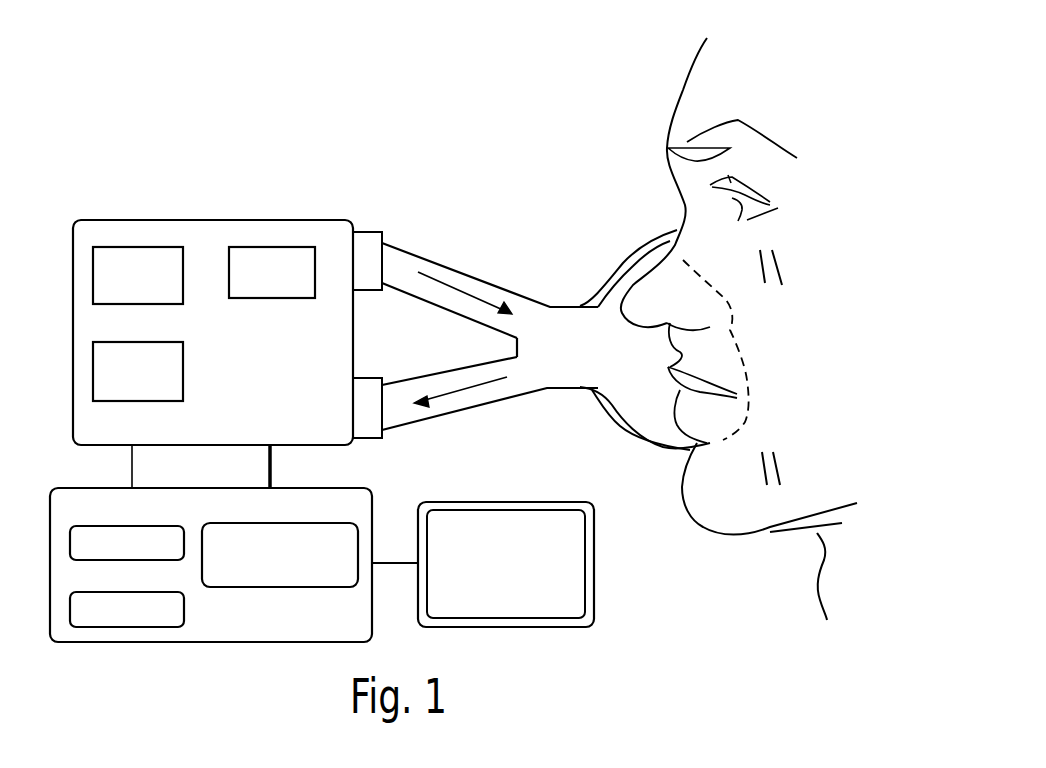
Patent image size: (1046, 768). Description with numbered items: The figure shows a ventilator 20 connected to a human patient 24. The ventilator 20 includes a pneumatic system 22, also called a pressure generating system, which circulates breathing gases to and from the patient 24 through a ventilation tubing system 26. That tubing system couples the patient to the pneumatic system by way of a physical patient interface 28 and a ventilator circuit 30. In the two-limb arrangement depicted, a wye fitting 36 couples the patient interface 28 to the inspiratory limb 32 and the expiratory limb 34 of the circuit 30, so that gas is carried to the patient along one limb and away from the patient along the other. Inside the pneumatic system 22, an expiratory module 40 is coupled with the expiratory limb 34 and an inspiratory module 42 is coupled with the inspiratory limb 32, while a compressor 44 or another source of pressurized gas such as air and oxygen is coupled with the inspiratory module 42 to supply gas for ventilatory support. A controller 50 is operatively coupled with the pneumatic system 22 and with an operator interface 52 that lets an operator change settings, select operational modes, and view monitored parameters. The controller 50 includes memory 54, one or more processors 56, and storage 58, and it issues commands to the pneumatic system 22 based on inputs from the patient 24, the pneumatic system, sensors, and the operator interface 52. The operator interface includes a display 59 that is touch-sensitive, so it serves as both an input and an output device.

The ventilator 20 is at (468, 123).
The pneumatic system 22 is at (205, 220).
The human patient 24 is at (670, 113).
The ventilation tubing system 26 is at (567, 237).
The patient interface 28 is at (612, 258).
The ventilator circuit 30 is at (500, 282).
The inspiratory limb 32 is at (433, 307).
The expiratory limb 34 is at (447, 415).
The wye fitting 36 is at (503, 347).
The expiratory module 40 is at (152, 401).
The inspiratory module 42 is at (152, 304).
The compressor 44 is at (272, 298).
The controller 50 is at (232, 642).
The operator interface 52 is at (619, 654).
The memory 54 is at (130, 560).
The processor 56 is at (307, 587).
The storage 58 is at (184, 609).
The display 59 is at (503, 627).